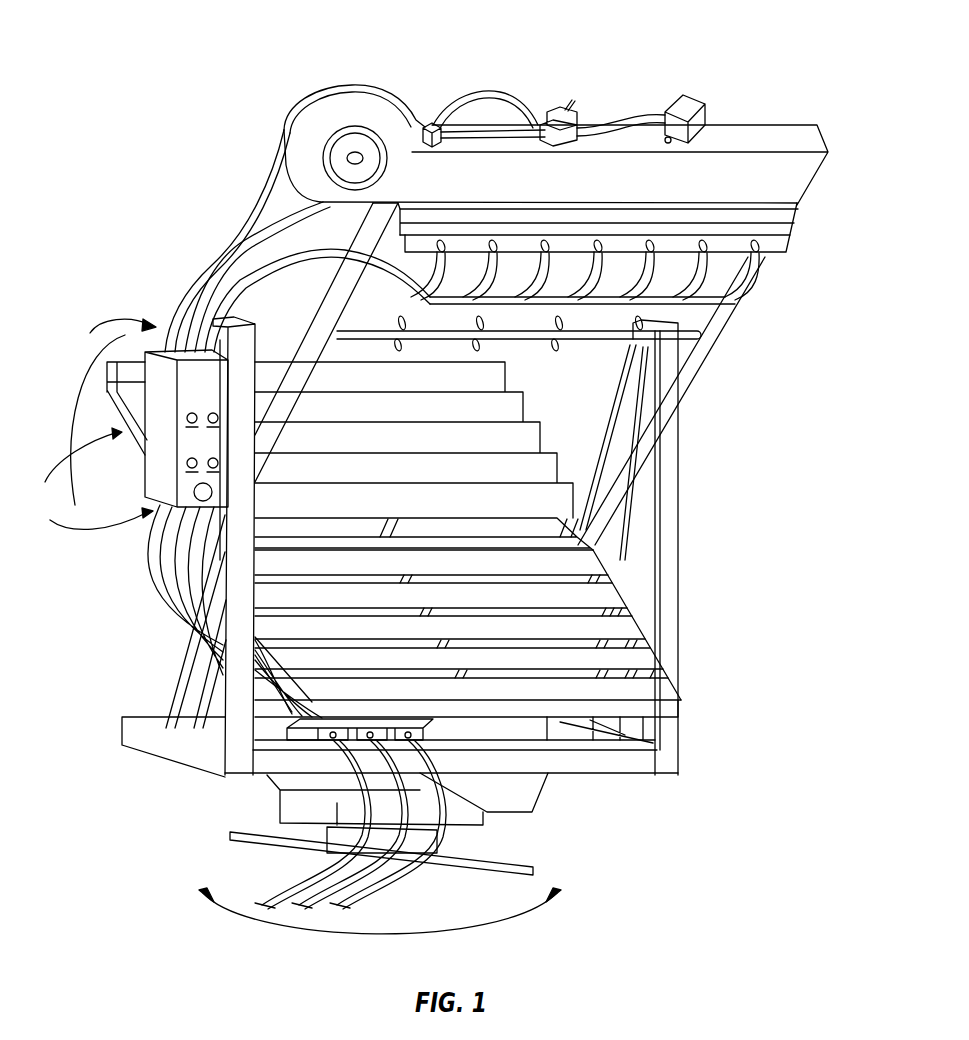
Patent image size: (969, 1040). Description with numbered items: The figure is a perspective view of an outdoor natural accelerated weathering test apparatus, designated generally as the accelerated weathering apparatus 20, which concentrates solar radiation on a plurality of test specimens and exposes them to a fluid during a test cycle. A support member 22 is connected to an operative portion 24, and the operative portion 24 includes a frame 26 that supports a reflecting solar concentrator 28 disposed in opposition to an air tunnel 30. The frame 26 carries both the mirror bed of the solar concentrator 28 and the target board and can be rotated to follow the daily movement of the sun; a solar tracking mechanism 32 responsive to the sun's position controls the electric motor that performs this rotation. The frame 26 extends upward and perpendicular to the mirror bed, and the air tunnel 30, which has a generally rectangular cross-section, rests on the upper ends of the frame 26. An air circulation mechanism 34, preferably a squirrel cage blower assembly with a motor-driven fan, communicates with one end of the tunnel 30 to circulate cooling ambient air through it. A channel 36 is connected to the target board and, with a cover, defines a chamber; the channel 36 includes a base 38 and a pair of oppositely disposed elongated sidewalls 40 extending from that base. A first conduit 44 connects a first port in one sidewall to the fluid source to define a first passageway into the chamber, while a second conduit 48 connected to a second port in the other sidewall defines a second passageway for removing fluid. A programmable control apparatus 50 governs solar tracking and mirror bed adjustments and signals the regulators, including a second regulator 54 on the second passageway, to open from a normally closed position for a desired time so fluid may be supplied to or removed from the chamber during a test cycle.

The accelerated weathering apparatus 20 is at (152, 68).
The support member 22 is at (268, 801).
The operative portion 24 is at (785, 301).
The frame 26 is at (620, 469).
The reflecting solar concentrator 28 is at (528, 379).
The air tunnel 30 is at (785, 147).
The solar tracking mechanism 32 is at (582, 103).
The air circulation mechanism 34 is at (345, 89).
The channel 36 is at (775, 243).
The base 38 is at (820, 201).
The sidewalls 40 is at (430, 233).
The first conduit 44 is at (266, 283).
The second conduit 48 is at (497, 96).
The control apparatus 50 is at (167, 518).
The second regulator 54 is at (440, 785).